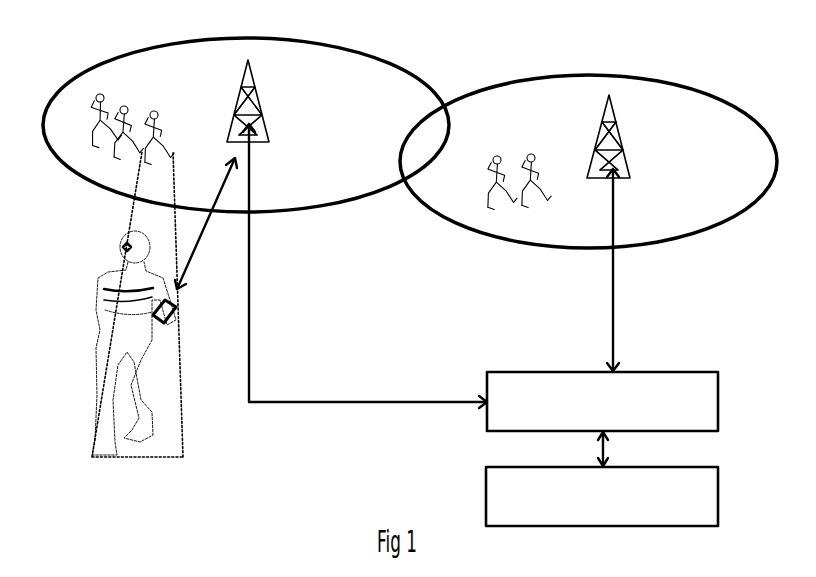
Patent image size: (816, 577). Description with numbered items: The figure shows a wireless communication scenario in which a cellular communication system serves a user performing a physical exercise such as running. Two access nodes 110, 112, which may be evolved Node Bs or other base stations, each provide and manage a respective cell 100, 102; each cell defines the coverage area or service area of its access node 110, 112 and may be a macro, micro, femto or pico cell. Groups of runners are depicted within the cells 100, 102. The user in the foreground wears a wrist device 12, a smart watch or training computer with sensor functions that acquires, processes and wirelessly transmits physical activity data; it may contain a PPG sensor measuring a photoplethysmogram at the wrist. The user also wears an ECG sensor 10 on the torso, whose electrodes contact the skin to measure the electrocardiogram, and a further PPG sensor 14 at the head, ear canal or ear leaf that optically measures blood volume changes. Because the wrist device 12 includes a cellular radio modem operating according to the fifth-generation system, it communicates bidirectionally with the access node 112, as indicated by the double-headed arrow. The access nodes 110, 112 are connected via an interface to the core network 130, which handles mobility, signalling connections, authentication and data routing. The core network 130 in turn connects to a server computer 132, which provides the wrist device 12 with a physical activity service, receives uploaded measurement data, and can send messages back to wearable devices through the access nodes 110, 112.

The cell 102 is at (85, 76).
The cell 100 is at (512, 83).
The access node 112 is at (258, 92).
The access node 110 is at (617, 130).
The PPG sensor 14 is at (124, 246).
The ECG sensor 10 is at (112, 290).
The wrist device 12 is at (175, 306).
The core network 130 is at (602, 401).
The server computer 132 is at (602, 496).